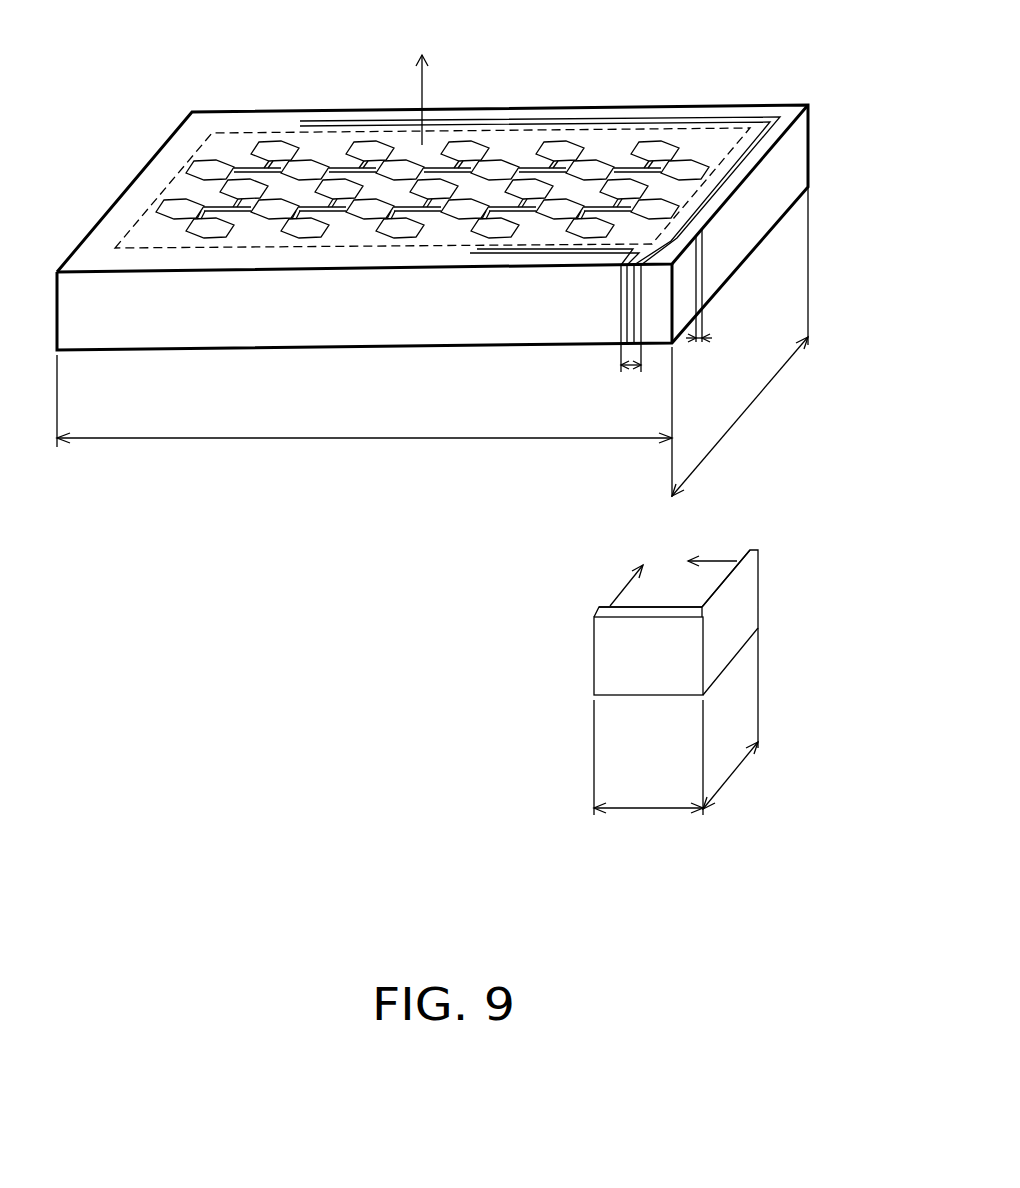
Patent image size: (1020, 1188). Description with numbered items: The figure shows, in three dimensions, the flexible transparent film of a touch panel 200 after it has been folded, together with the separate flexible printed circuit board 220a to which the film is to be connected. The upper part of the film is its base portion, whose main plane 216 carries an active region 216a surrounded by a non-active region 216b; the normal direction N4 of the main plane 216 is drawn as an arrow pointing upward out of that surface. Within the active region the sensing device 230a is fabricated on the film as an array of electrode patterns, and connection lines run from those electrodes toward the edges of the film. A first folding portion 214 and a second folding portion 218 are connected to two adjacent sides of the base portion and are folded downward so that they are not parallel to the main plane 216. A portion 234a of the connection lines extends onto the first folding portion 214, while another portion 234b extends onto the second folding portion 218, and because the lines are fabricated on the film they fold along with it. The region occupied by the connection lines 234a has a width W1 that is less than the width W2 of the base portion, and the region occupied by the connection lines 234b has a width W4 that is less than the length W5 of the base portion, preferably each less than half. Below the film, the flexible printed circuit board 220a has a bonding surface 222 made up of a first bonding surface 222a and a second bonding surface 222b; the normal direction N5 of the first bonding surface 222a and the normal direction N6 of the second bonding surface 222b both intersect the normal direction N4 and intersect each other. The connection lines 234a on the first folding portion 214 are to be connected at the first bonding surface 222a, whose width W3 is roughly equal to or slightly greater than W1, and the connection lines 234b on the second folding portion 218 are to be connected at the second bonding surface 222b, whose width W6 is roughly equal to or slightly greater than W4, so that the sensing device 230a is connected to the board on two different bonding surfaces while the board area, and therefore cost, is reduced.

The touch panel 200 is at (862, 897).
The first folding portion 214 is at (753, 225).
The main plane 216 is at (352, 45).
The active region 216a is at (273, 133).
The non-active region 216b is at (242, 110).
The second folding portion 218 is at (418, 318).
The flexible printed circuit board 220a is at (747, 600).
The bonding surface 222 is at (620, 648).
The first bonding surface 222a is at (718, 582).
The second bonding surface 222b is at (635, 603).
The sensing device 230a is at (183, 192).
The connection lines 234a is at (707, 270).
The connection lines 234b is at (620, 293).
The normal direction of the main plane N4 is at (421, 88).
The normal direction of the first bonding surface N5 is at (714, 546).
The normal direction of the second bonding surface N6 is at (615, 585).
The width of the region distributed with the connection lines on the first folding p W1 is at (704, 346).
The width of the base portion W2 is at (740, 341).
The width of the first bonding surface W3 is at (737, 719).
The width of the region distributed with the connection lines on the second folding W4 is at (632, 376).
The length of the base portion W5 is at (364, 422).
The width of the second bonding surface W6 is at (648, 777).